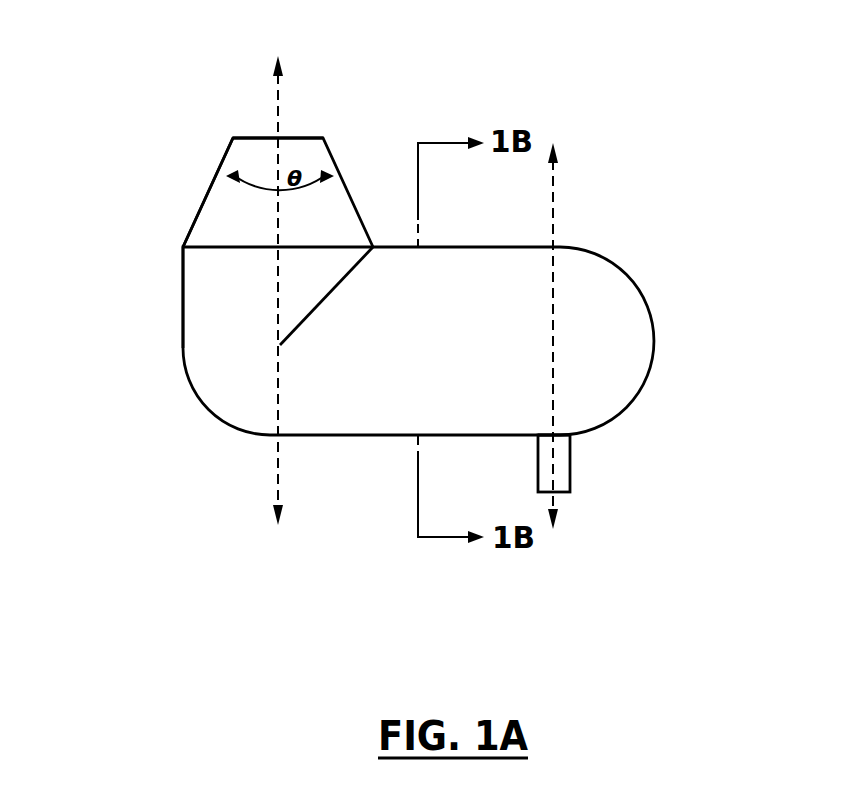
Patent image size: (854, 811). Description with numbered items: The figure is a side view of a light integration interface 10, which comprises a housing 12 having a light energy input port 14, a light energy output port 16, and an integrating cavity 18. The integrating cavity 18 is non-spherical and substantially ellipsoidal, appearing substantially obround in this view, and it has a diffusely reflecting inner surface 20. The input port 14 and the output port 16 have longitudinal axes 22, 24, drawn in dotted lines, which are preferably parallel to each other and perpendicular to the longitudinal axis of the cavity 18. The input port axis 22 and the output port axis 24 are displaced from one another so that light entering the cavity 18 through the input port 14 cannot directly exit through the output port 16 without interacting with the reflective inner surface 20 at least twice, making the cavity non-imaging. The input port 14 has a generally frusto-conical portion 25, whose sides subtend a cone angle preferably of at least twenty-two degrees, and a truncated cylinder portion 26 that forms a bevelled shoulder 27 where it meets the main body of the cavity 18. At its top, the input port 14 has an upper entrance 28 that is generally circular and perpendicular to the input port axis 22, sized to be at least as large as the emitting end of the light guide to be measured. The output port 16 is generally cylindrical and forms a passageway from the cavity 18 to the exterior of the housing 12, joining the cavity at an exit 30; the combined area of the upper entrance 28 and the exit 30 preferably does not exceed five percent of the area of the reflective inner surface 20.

The light integration interface 10 is at (445, 75).
The housing 12 is at (627, 275).
The light energy input port 14 is at (215, 176).
The light energy output port 16 is at (570, 463).
The integrating cavity 18 is at (448, 290).
The reflective inner surface 20 is at (527, 377).
The input port axis 22 is at (275, 113).
The output port axis 24 is at (553, 202).
The frusto-conical portion 25 is at (197, 222).
The truncated cylinder portion 26 is at (183, 303).
The bevelled shoulder 27 is at (323, 302).
The upper entrance 28 is at (305, 138).
The exit 30 is at (560, 437).